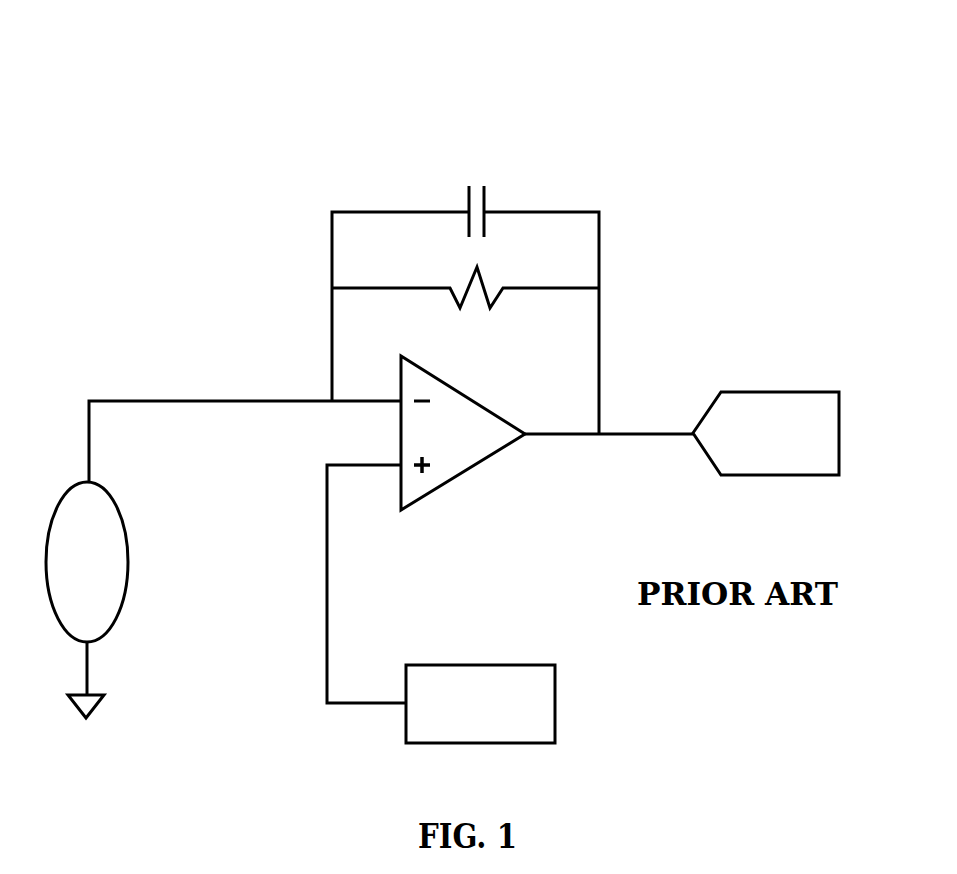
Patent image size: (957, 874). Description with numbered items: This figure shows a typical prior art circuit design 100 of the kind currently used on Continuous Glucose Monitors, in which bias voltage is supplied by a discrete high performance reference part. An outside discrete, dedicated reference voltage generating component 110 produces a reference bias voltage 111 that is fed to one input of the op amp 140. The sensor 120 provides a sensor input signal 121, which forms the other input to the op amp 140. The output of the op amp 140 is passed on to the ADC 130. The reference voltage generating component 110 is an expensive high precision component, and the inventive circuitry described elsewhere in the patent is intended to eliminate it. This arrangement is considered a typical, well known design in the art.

The prior art circuit design 100 is at (760, 65).
The reference voltage generating component 110 is at (557, 698).
The reference bias voltage 111 is at (330, 630).
The sensor 120 is at (130, 550).
The sensor input signal 121 is at (158, 397).
The ADC 130 is at (790, 392).
The op amp 140 is at (455, 483).